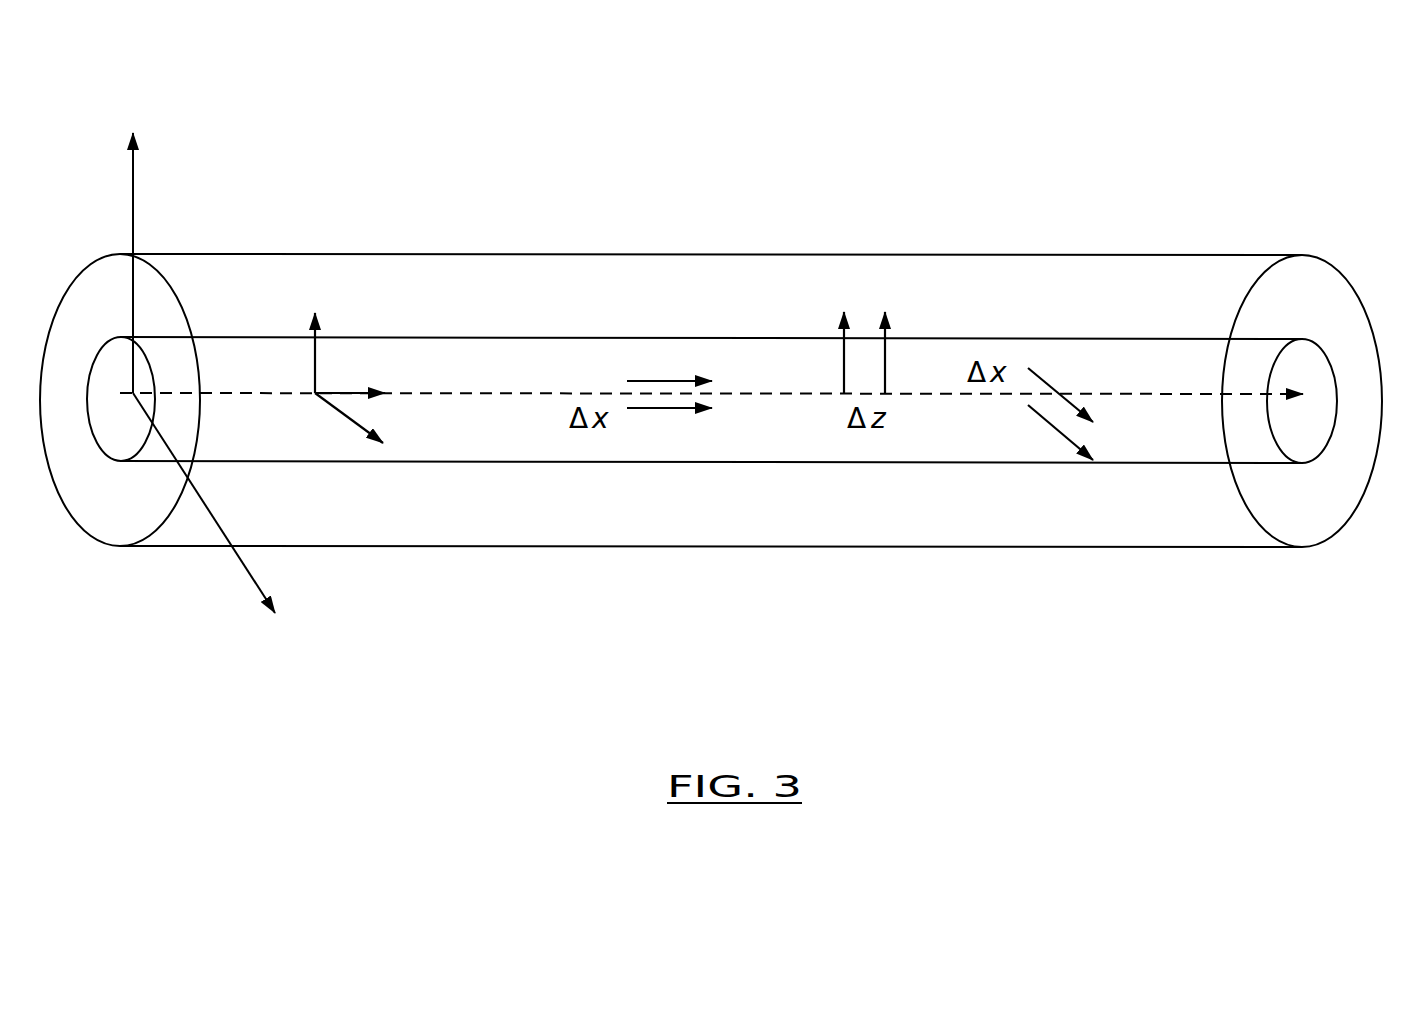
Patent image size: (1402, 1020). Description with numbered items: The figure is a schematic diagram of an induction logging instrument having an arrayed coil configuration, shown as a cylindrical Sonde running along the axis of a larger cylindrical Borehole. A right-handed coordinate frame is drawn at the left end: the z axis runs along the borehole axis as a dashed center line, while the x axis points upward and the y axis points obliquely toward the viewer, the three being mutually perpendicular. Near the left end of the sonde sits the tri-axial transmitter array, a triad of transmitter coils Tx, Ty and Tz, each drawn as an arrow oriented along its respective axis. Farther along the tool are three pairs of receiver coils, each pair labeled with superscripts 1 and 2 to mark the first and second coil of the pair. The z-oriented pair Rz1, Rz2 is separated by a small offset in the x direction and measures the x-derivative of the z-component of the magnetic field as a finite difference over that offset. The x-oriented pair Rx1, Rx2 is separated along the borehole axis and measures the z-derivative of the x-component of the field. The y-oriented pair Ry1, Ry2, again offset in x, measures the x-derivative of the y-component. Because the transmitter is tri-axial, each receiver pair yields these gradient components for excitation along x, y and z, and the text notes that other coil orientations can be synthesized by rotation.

The first receiver set (Rz1, Rx1, Ry1) 1 is at (860, 369).
The second receiver set (Rz2, Rx2, Ry2) 2 is at (868, 348).
The borehole Borehole is at (711, 363).
The sonde Sonde is at (712, 371).
The x-axis x is at (134, 245).
The y-axis y is at (210, 518).
The z-axis z is at (722, 395).
The transmitter coil Tx is at (319, 336).
The transmitter coil Ty is at (366, 424).
The transmitter coil Tz is at (361, 373).
The receiver coil Rx1 is at (823, 333).
The receiver coil Rx2 is at (908, 333).
The receiver coil Ry1 is at (1041, 434).
The receiver coil Ry2 is at (1068, 384).
The receiver coil Rz1 is at (689, 429).
The receiver coil Rz2 is at (689, 372).